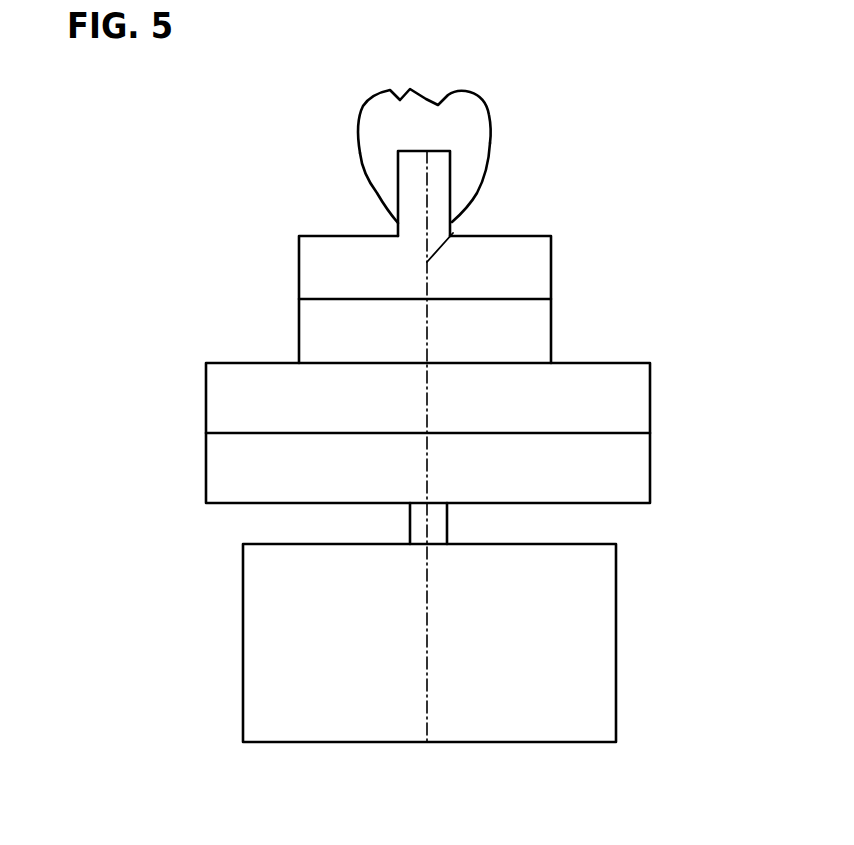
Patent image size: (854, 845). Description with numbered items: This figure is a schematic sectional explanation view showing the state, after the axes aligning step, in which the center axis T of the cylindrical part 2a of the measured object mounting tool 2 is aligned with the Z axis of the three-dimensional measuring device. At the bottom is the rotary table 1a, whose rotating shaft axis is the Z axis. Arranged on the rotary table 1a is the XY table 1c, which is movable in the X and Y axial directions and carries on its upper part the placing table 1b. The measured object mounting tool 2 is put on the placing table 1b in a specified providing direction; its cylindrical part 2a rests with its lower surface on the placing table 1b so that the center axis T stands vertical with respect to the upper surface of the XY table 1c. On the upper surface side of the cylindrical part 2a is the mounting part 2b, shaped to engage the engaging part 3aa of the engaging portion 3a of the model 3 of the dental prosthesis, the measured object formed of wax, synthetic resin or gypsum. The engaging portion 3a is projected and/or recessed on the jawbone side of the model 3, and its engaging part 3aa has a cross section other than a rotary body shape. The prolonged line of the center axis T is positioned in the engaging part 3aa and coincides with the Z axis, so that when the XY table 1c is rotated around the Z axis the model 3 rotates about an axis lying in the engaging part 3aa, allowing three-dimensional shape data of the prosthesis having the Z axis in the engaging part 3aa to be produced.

The rotary table 1a is at (598, 633).
The placing table 1b is at (523, 327).
The XY table 1c is at (222, 400).
The measured object mounting tool 2 is at (414, 190).
The cylindrical part 2a is at (523, 263).
The mounting part 2b is at (437, 177).
The model of the dental prosthesis 3 is at (406, 112).
The engaging portion 3a is at (450, 223).
The engaging part 3aa is at (398, 168).
The center axis T is at (453, 233).
The Z axis Z is at (429, 717).